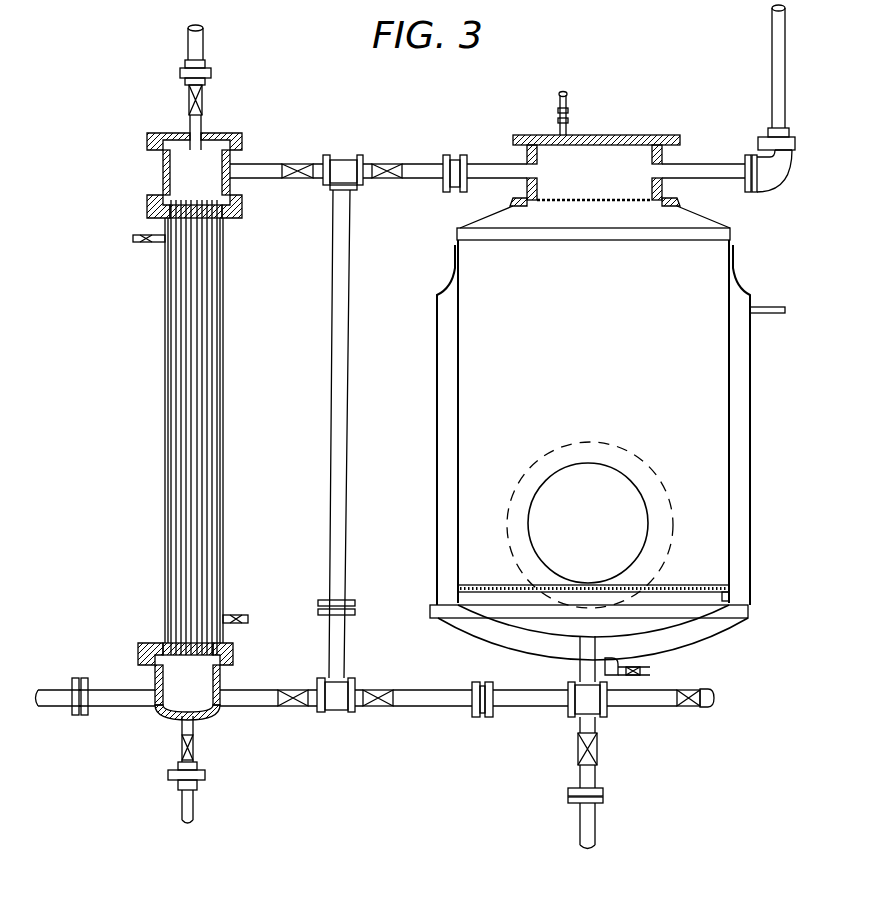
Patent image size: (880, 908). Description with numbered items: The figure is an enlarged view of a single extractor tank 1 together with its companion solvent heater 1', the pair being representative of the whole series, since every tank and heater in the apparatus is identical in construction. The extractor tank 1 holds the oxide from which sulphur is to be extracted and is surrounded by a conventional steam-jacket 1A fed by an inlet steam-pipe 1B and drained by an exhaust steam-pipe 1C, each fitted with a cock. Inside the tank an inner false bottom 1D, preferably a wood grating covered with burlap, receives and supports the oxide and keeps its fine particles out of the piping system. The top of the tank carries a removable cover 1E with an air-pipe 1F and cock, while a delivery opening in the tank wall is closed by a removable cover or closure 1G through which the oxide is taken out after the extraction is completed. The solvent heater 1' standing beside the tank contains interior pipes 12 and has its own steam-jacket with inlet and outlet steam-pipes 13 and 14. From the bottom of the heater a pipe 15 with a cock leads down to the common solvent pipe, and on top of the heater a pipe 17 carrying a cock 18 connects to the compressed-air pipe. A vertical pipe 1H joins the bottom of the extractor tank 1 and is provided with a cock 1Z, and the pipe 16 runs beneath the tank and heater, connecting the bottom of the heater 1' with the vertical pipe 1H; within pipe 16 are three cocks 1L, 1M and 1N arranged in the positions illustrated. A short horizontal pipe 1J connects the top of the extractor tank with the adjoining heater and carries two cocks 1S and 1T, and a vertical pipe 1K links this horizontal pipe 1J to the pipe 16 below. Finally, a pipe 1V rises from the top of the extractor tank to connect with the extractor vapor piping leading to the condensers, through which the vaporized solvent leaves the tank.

The extractor tank 1 is at (589, 444).
The solvent heater 1' is at (217, 430).
The interior pipes 12 is at (183, 468).
The inlet steam-pipe of heater 13 is at (133, 240).
The outlet steam-pipe of heater 14 is at (249, 616).
The heater bottom pipe 15 is at (193, 808).
The connecting pipe 16 is at (530, 698).
The heater top pipe 17 is at (203, 48).
The cock 18 is at (202, 107).
The cock 1S is at (298, 178).
The cock 1T is at (387, 180).
The short horizontal pipe 1J is at (438, 175).
The vertical pipe 1K is at (350, 497).
The cock 1L is at (293, 703).
The cock 1M is at (380, 706).
The cock 1N is at (714, 698).
The cock 1Z is at (597, 750).
The vertical pipe 1H is at (590, 826).
The exhaust steam-pipe 1C is at (650, 671).
The inner false bottom 1D is at (729, 586).
The removable cover or closure 1G is at (630, 530).
The steam-jacket 1A is at (742, 482).
The inlet steam-pipe 1B is at (785, 313).
The removable cover 1E is at (623, 135).
The air-pipe 1F is at (566, 95).
The vapor pipe 1V is at (772, 57).